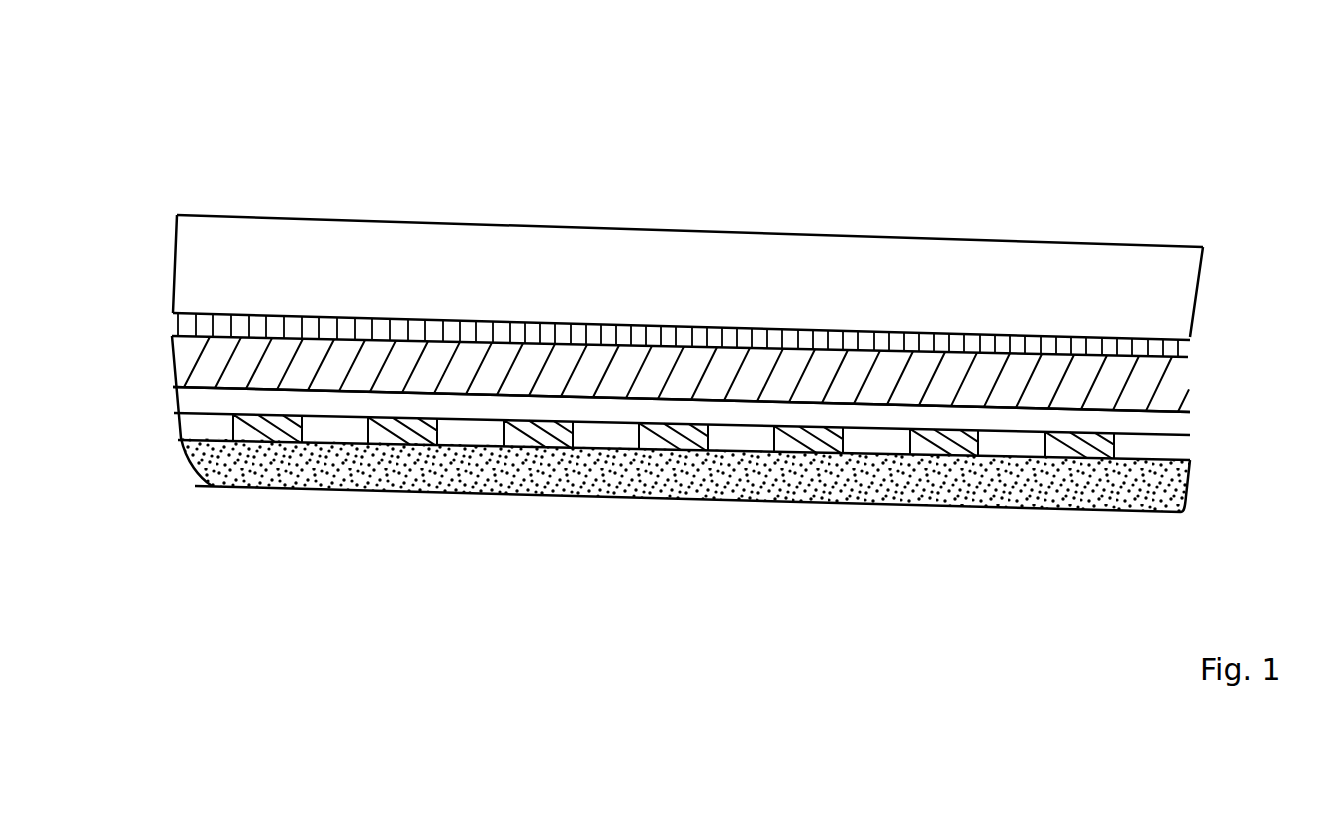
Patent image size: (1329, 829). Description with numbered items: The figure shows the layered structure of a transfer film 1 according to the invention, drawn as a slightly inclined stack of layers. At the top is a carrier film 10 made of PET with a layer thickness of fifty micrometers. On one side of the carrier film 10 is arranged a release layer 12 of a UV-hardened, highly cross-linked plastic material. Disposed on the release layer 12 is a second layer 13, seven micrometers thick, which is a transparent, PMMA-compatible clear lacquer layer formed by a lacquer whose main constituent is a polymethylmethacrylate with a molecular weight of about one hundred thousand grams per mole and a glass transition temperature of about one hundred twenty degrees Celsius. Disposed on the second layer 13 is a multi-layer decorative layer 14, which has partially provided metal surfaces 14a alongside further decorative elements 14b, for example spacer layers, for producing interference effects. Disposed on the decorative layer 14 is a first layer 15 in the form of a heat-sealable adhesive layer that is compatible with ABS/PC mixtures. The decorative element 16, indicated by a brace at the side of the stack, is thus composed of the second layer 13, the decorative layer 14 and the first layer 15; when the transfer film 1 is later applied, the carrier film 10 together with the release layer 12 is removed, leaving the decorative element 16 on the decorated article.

The transfer film 1 is at (903, 220).
The carrier film 10 is at (1167, 275).
The release layer 12 is at (1172, 355).
The second layer 13 is at (1175, 388).
The decorative layer 14 is at (1190, 415).
The metal surfaces 14a is at (678, 442).
The further decorative elements 14b is at (450, 410).
The first layer 15 is at (1180, 490).
The decorative element 16 is at (215, 487).